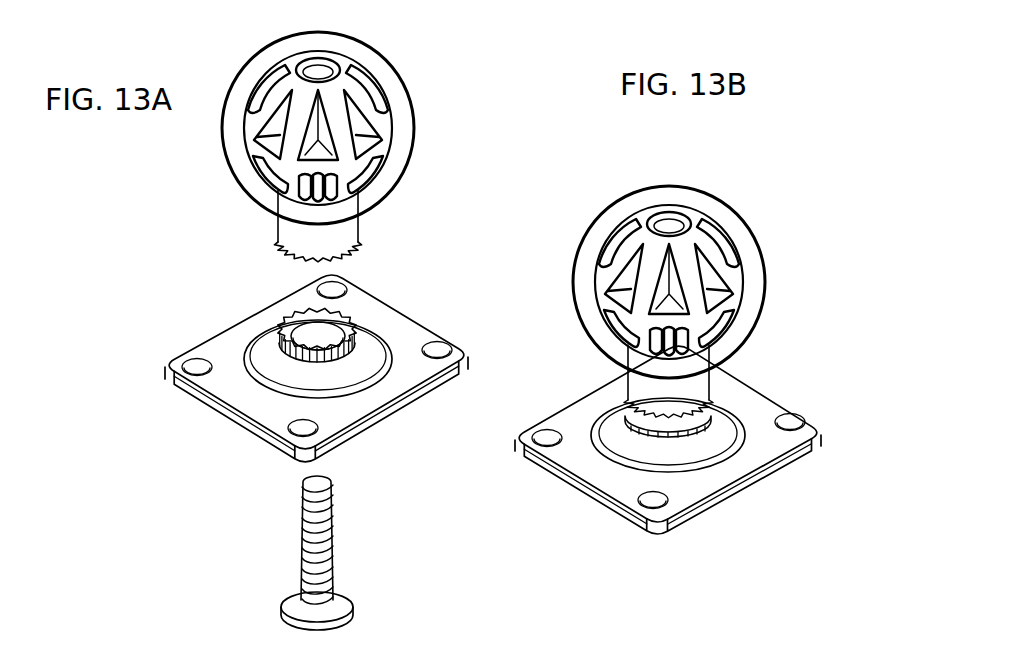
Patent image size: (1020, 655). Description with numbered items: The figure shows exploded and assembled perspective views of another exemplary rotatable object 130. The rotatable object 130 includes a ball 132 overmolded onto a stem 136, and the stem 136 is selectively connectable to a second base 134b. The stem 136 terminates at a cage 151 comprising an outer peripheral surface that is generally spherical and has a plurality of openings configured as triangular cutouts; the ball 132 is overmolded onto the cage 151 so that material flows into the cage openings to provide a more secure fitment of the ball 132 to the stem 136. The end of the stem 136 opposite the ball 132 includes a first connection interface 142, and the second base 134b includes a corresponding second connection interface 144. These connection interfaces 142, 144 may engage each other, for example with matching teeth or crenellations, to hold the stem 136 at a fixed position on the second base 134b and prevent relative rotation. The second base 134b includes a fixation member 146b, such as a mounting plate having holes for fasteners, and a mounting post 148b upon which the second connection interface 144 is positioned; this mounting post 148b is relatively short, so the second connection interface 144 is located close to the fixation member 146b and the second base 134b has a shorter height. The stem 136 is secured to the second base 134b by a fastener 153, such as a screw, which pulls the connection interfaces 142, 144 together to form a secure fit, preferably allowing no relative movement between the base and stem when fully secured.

In FIG. 13A, the rotatable object 130 is at (447, 90).
In FIG. 13B, the rotatable object 130 is at (767, 188).
In FIG. 13A, the ball 132 is at (413, 135).
In FIG. 13B, the ball 132 is at (745, 270).
In FIG. 13A, the cage 151 is at (264, 81).
In FIG. 13B, the cage 151 is at (647, 242).
In FIG. 13A, the stem 136 is at (338, 230).
In FIG. 13B, the stem 136 is at (683, 387).
In FIG. 13A, the first connection interface 142 is at (357, 247).
In FIG. 13A, the second connection interface 144 is at (282, 323).
In FIG. 13A, the mounting post 148b is at (270, 361).
In FIG. 13B, the mounting post 148b is at (628, 430).
In FIG. 13A, the fixation member 146b is at (232, 422).
In FIG. 13B, the fixation member 146b is at (562, 490).
In FIG. 13A, the second base 134b is at (387, 417).
In FIG. 13B, the second base 134b is at (743, 475).
In FIG. 13A, the fastener 153 is at (332, 552).